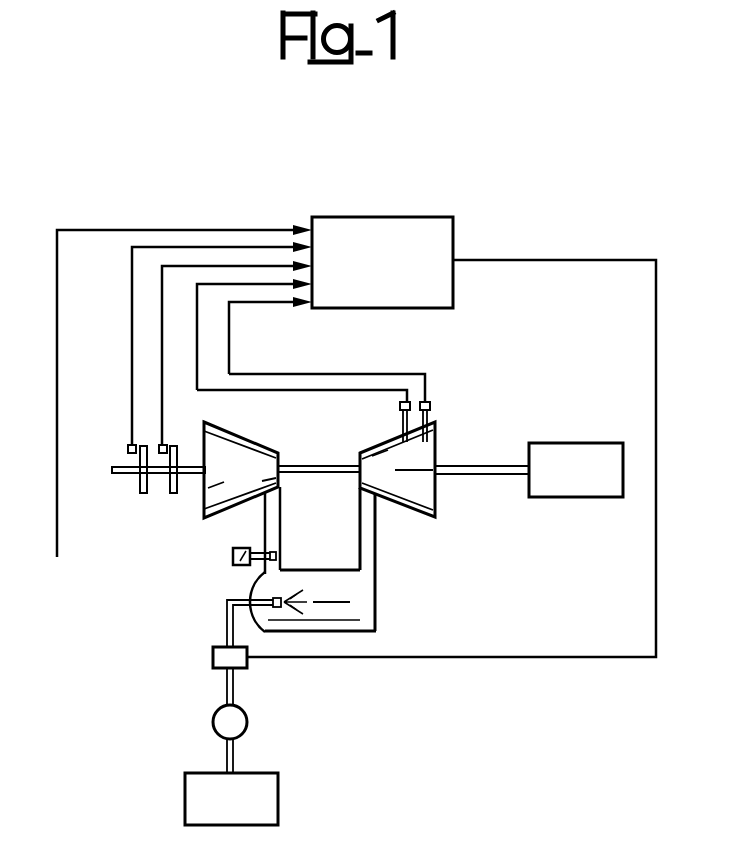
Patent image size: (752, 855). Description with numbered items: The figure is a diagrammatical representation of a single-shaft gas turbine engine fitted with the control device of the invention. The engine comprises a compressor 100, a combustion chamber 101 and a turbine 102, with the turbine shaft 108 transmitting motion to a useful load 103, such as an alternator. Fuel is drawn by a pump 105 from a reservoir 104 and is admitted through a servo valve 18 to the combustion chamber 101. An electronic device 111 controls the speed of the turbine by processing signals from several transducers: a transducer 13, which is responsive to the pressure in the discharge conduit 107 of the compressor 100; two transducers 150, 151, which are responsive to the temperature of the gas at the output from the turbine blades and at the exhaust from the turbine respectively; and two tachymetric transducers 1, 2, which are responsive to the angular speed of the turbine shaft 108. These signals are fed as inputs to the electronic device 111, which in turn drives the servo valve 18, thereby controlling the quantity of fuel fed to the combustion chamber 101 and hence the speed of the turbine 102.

The tachymetric transducer 1 is at (159, 448).
The tachymetric transducer 2 is at (128, 447).
The transducer 13 is at (233, 565).
The servo valve 18 is at (235, 655).
The compressor 100 is at (231, 450).
The combustion chamber 101 is at (355, 609).
The turbine 102 is at (435, 502).
The useful load 103 is at (567, 458).
The reservoir 104 is at (255, 800).
The pump 105 is at (233, 725).
The discharge conduit 107 is at (280, 520).
The turbine shaft 108 is at (125, 477).
The electronic device 111 is at (370, 237).
The transducer 150 is at (431, 405).
The transducer 151 is at (400, 406).